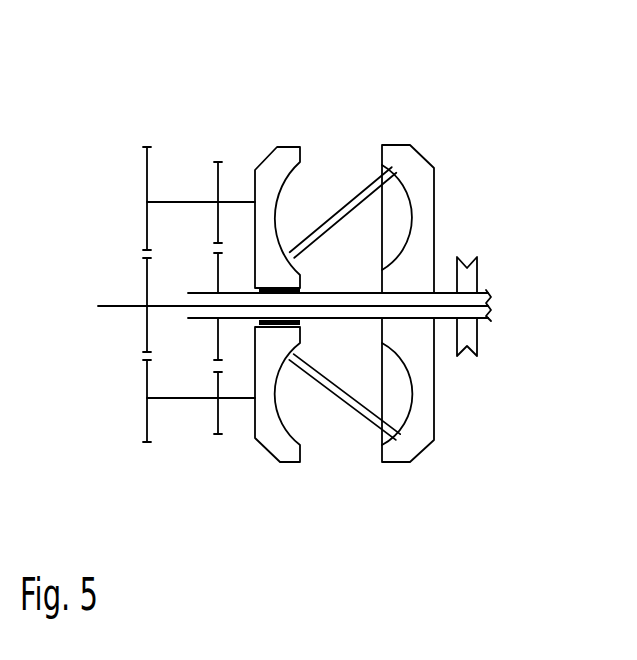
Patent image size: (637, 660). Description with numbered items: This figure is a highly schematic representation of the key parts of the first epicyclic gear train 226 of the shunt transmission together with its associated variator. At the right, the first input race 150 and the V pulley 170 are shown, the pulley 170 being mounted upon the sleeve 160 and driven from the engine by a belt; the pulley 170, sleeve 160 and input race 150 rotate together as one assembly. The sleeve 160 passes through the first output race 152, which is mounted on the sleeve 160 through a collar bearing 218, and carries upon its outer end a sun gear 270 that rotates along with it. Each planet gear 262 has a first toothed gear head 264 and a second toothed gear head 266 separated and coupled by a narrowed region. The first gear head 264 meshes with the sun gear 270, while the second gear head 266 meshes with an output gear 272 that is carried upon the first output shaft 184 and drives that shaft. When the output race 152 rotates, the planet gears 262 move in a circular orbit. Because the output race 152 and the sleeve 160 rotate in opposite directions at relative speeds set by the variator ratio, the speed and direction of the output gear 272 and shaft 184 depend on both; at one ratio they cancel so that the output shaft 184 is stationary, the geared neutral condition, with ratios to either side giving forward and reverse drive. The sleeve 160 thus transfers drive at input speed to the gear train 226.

The first epicyclic gear train 226 is at (174, 87).
The second toothed gear head 266 is at (145, 160).
The planet gear 262 is at (182, 187).
The first toothed gear head 264 is at (219, 166).
The output gear 272 is at (143, 282).
The sun gear 270 is at (216, 272).
The first output shaft 184 is at (107, 307).
The first output race 152 is at (292, 147).
The collar bearing 218 is at (298, 292).
The first input race 150 is at (422, 152).
The V pulley 170 is at (478, 266).
The sleeve 160 is at (482, 320).